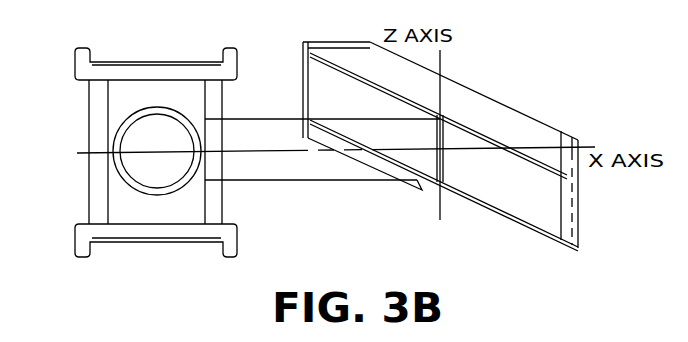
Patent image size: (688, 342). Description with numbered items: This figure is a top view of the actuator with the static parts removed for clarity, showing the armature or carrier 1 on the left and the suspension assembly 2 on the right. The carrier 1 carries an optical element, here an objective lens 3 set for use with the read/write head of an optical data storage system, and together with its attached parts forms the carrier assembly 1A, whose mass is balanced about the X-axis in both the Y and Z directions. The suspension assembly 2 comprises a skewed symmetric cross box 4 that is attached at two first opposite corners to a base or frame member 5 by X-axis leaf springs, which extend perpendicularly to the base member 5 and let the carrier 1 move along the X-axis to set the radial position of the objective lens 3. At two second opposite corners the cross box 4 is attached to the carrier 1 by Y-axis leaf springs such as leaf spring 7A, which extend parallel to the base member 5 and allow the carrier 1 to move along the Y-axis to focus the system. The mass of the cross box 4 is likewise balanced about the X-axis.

The armature or carrier 1 is at (128, 88).
The carrier assembly 1A is at (136, 159).
The objective lens 3 is at (122, 140).
The leaf spring 7A is at (249, 127).
The suspension assembly 2 is at (440, 149).
The skewed symmetric cross box 4 is at (495, 206).
The base or frame member 5 is at (535, 127).